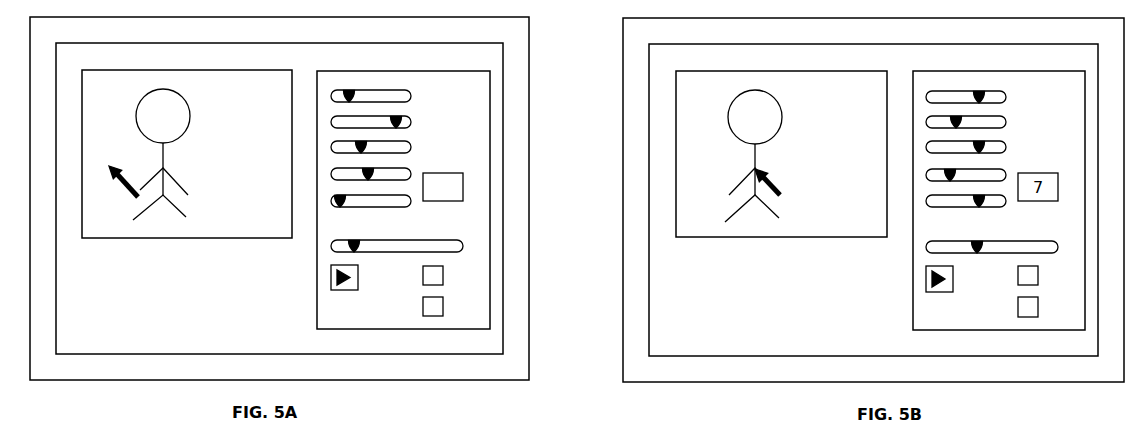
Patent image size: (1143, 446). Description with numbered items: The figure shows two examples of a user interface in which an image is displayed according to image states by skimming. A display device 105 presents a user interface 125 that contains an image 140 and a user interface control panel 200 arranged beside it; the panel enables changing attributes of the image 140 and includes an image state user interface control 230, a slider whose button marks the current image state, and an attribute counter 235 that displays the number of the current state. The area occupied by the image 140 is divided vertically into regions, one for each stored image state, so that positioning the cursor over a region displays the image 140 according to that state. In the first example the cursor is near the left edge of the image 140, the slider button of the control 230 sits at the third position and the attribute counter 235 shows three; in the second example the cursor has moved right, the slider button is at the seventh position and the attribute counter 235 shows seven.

In FIG. 5A, the display device 105 is at (529, 33).
In FIG. 5B, the display device 105 is at (623, 33).
In FIG. 5A, the user interface 125 is at (503, 62).
In FIG. 5B, the user interface 125 is at (649, 62).
In FIG. 5B, the image 140 is at (676, 98).
In FIG. 5A, the user interface control panel 200 is at (453, 200).
In FIG. 5A, the attribute counter 235 is at (463, 186).
In FIG. 5A, the image state user interface control 230 is at (463, 246).